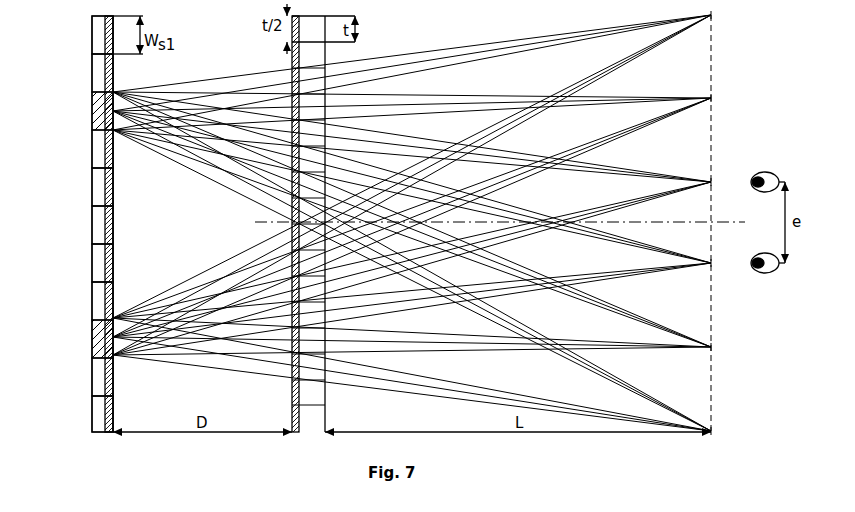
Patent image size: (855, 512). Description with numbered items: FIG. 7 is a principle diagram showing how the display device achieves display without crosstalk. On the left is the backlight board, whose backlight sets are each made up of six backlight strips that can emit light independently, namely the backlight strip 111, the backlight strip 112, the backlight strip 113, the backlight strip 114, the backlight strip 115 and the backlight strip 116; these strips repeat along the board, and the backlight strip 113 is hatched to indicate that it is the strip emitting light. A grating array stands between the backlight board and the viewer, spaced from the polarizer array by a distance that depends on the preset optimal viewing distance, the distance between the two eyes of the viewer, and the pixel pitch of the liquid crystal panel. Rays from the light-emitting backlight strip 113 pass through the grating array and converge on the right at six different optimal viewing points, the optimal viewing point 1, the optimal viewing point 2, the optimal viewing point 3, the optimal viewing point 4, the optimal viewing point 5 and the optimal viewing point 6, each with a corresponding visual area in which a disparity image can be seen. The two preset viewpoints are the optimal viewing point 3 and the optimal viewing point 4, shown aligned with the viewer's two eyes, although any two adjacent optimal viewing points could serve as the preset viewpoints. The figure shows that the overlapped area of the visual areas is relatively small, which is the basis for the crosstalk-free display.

The backlight strip 111 is at (98, 188).
The backlight strip 112 is at (98, 150).
The backlight strip 113 is at (98, 113).
The backlight strip 114 is at (98, 75).
The backlight strip 115 is at (98, 37).
The backlight strip 116 is at (98, 225).
The optimal viewing point 1 is at (419, 266).
The optimal viewing point 2 is at (419, 224).
The optimal viewing point 3 is at (419, 223).
The optimal viewing point 4 is at (419, 223).
The optimal viewing point 5 is at (419, 222).
The optimal viewing point 6 is at (419, 181).